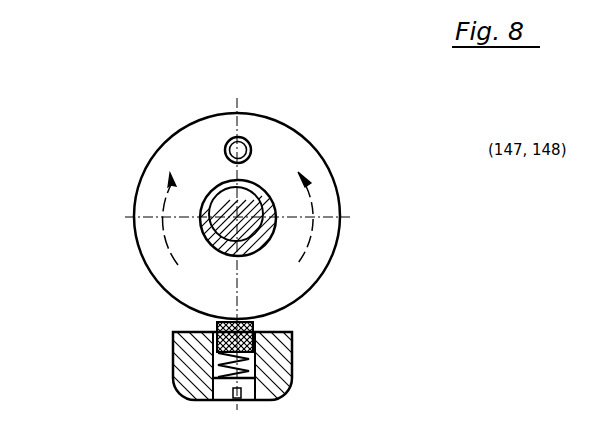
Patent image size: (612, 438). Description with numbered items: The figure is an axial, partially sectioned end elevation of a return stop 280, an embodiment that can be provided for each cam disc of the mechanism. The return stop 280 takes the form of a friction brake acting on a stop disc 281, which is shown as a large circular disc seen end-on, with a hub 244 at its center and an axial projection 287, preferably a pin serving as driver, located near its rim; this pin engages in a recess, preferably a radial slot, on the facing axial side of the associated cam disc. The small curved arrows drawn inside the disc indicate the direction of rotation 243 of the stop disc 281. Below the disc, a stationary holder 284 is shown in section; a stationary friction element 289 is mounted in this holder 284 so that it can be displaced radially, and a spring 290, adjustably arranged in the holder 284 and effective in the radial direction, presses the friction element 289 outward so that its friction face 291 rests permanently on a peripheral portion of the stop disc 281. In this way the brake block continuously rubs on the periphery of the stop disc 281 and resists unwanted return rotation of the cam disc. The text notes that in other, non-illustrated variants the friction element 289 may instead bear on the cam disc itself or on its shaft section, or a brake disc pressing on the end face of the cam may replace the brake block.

The return stop 280 is at (350, 121).
The stop disc 281 is at (310, 201).
The rotation path 243 is at (95, 184).
The hub / shaft 244 is at (327, 219).
The axial projection 287 is at (247, 134).
The friction element 289 is at (335, 320).
The spring 290 is at (154, 334).
The holder 284 is at (291, 366).
The friction face 291 is at (135, 283).